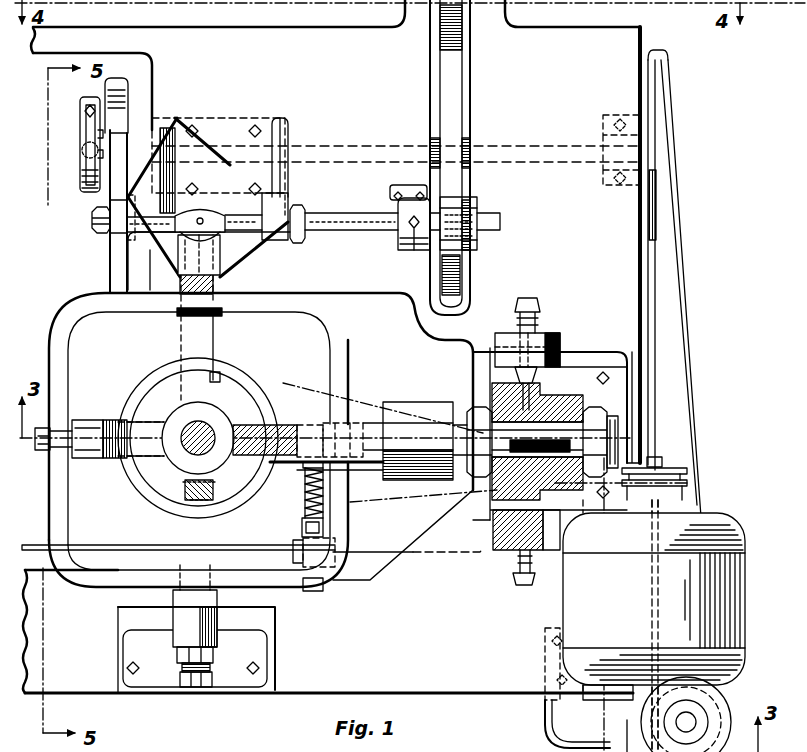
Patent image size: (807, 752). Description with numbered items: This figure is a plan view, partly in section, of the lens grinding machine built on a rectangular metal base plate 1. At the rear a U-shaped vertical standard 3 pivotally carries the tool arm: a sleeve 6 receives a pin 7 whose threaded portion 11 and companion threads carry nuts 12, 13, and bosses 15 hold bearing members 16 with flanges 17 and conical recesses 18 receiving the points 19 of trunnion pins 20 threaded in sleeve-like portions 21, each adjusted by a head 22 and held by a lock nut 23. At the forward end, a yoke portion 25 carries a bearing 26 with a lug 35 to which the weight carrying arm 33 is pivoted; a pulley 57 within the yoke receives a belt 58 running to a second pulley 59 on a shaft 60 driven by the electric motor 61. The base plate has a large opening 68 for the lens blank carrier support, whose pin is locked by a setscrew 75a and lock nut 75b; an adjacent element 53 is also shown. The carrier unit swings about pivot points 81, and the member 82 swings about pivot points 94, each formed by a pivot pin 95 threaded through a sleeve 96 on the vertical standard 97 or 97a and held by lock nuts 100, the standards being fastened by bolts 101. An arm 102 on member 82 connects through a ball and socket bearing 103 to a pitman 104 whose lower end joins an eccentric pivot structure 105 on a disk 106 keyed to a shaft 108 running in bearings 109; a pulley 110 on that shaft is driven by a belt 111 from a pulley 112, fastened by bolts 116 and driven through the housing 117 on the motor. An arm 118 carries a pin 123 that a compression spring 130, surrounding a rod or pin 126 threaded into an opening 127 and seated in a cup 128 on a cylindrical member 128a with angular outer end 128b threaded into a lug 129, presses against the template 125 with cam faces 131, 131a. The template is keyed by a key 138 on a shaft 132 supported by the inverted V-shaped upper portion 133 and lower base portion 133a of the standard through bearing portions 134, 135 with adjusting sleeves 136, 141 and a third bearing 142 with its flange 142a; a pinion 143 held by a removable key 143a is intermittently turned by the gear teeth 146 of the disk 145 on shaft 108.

The base plate 1 is at (493, 673).
The vertical standard 3 is at (590, 376).
The sleeve 6 is at (409, 405).
The pin 7 is at (433, 405).
The threaded portion 11 is at (614, 440).
The nut 12 is at (473, 420).
The nut 13 is at (600, 425).
The bosses 15 is at (555, 400).
The bearing members 16 is at (560, 412).
The flange 17 is at (545, 497).
The conical recess 18 is at (518, 381).
The point 19 is at (520, 376).
The trunnion pin 20 is at (565, 540).
The sleeve-like portion 21 is at (560, 340).
The head 22 is at (526, 583).
The lock nut 23 is at (538, 322).
The yoke portion 25 is at (146, 462).
The bearing 26 is at (212, 418).
The weight carrying arm 33 is at (276, 432).
The lug 35 is at (262, 426).
The link rod 53 is at (400, 548).
The pulley 57 is at (170, 392).
The belt 58 is at (305, 389).
The second pulley 59 is at (688, 474).
The shaft 60 is at (662, 462).
The electric motor 61 is at (712, 545).
The opening 68 is at (383, 568).
The setscrew 75a is at (201, 505).
The lock nut 75b is at (185, 500).
The pivot points 81 is at (78, 425).
The member 82 is at (65, 345).
The pivot points 94 is at (217, 312).
The pivot pin 95 is at (180, 668).
The sleeve 96 is at (195, 622).
The vertical standard 97 is at (275, 620).
The vertical standard 97a is at (278, 180).
The lock nuts 100 is at (178, 650).
The bolts 101 is at (288, 128).
The arm 102 is at (110, 255).
The ball and socket bearing 103 is at (90, 152).
The pitman 104 is at (95, 130).
The ball and socket pivot structure 105 is at (95, 188).
The disk 106 is at (128, 95).
The shaft 108 is at (515, 150).
The bearings 109 is at (615, 143).
The pulley 110 is at (660, 192).
The belt 111 is at (683, 273).
The pulley 112 is at (724, 706).
The bolts 116 is at (566, 700).
The housing 117 is at (722, 687).
The arm 118 is at (200, 333).
The pin 123 is at (208, 272).
The template 125 is at (218, 220).
The rod or pin 126 is at (330, 474).
The opening 127 is at (303, 466).
The cup 128 is at (330, 519).
The cylindrical member 128a is at (302, 525).
The angular outer end 128b is at (318, 590).
The lug 129 is at (178, 551).
The compression spring 130 is at (325, 492).
The cam face 131 is at (197, 208).
The cam face 131a is at (185, 247).
The shaft 132 is at (340, 233).
The inverted V-shaped upper portion 133 is at (242, 247).
The lower base portion 133a is at (236, 128).
The bearing portion 134 is at (130, 200).
The bearing portion 135 is at (282, 206).
The sleeve portion 136 is at (305, 232).
The key 138 is at (203, 218).
The sleeve 141 is at (97, 233).
The third bearing 142 is at (405, 213).
The flange 142a is at (408, 262).
The pinion 143 is at (458, 216).
The removable key 143a is at (466, 236).
The disk 145 is at (452, 65).
The gear teeth 146 is at (445, 22).